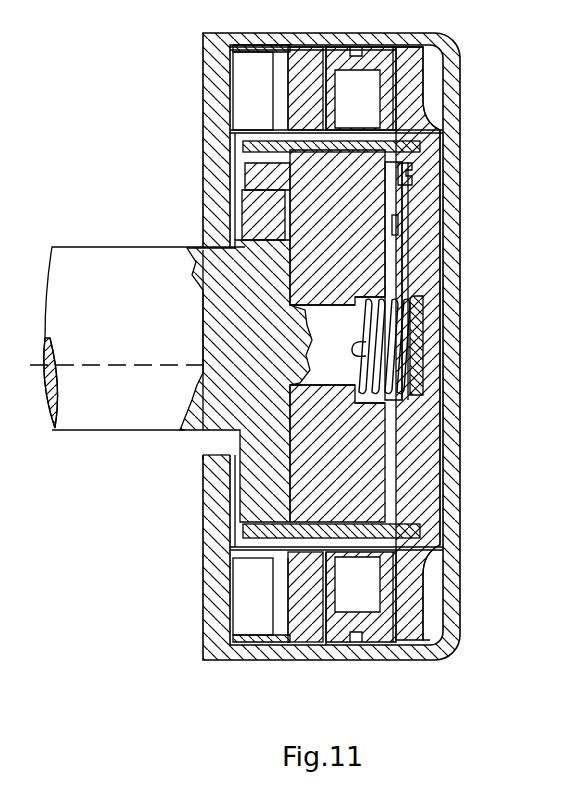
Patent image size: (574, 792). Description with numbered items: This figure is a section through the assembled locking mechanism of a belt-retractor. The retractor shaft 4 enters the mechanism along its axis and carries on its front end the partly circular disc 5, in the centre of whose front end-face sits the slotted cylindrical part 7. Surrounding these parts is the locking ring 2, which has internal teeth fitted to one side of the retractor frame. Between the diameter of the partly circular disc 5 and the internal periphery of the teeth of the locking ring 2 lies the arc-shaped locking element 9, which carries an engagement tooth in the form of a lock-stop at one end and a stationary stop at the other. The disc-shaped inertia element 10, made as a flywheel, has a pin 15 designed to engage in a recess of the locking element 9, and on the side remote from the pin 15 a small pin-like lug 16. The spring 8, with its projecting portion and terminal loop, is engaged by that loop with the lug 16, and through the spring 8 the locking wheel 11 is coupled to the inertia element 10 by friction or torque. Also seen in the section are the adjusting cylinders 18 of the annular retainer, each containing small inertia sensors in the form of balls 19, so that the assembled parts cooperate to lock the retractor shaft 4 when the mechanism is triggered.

The locking ring 2 is at (250, 596).
The retractor shaft 4 is at (148, 398).
The partly circular disc 5 is at (275, 493).
The slotted cylindrical part 7 is at (338, 375).
The spring 8 is at (402, 288).
The locking element 9 is at (262, 211).
The inertia element 10 is at (358, 256).
The locking wheel 11 is at (410, 524).
The pin 15 is at (262, 176).
The lug 16 is at (402, 187).
The adjusting cylinder 18 is at (422, 62).
The ball 19 is at (367, 100).